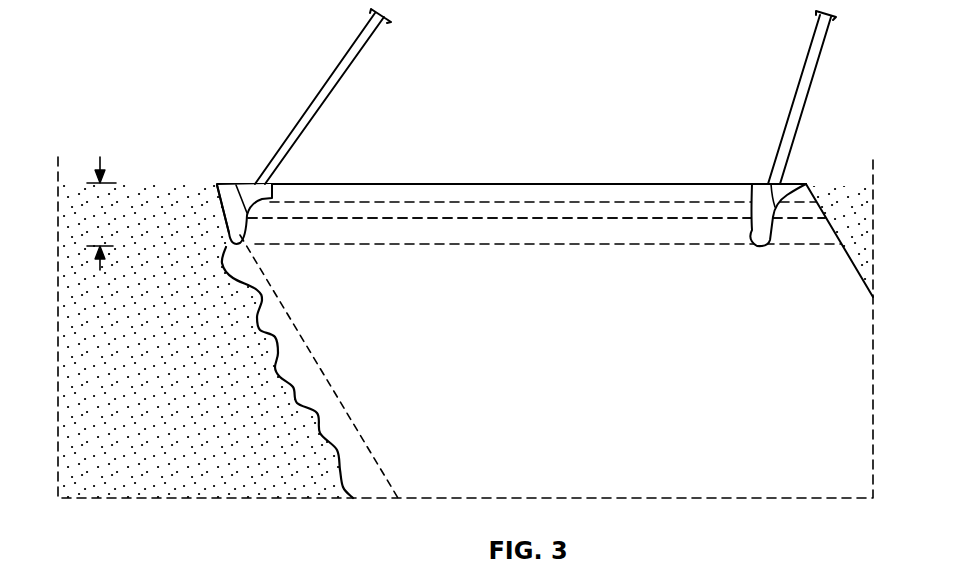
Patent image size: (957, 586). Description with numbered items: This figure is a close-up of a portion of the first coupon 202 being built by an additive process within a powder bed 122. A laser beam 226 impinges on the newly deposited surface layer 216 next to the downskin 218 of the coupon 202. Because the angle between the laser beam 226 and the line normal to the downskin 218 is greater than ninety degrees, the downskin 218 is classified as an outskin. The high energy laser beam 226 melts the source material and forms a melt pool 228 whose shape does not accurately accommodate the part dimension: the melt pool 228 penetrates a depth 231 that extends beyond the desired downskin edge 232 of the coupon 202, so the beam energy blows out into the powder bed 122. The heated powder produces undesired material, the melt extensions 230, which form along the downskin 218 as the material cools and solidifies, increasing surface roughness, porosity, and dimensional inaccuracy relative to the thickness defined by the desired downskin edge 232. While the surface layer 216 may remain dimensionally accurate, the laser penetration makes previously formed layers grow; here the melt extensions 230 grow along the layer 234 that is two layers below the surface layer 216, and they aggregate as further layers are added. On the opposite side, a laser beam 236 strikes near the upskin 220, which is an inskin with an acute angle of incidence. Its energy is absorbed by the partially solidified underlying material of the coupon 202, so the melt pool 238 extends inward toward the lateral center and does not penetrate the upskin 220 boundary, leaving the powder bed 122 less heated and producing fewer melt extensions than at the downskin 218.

The powder bed 122 is at (118, 368).
The first coupon 202 is at (518, 273).
The surface layer 216 is at (457, 196).
The downskin 218 is at (216, 235).
The upskin 220 is at (835, 228).
The laser beam 226 is at (316, 103).
The melt pool 228 is at (222, 201).
The melt extensions 230 is at (250, 270).
The depth 231 is at (98, 157).
The desired downskin edge 232 is at (305, 337).
The layer 234 is at (603, 230).
The laser beam 236 is at (800, 103).
The melt pool 238 is at (762, 228).